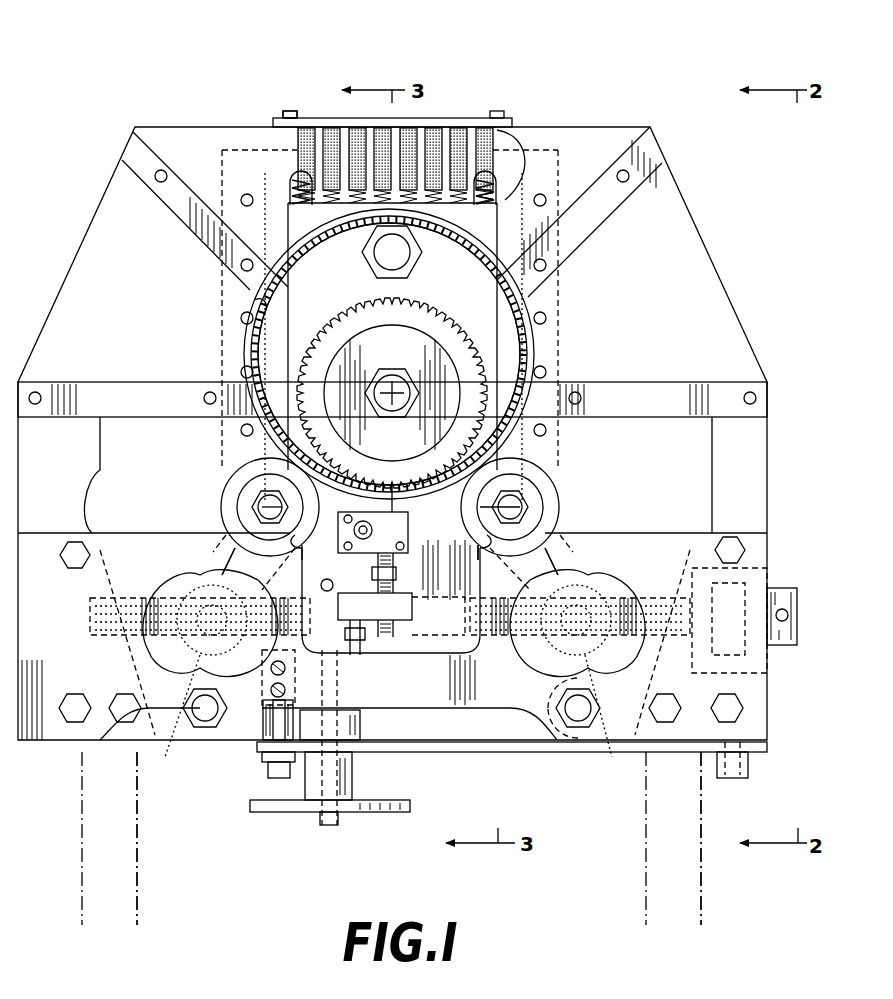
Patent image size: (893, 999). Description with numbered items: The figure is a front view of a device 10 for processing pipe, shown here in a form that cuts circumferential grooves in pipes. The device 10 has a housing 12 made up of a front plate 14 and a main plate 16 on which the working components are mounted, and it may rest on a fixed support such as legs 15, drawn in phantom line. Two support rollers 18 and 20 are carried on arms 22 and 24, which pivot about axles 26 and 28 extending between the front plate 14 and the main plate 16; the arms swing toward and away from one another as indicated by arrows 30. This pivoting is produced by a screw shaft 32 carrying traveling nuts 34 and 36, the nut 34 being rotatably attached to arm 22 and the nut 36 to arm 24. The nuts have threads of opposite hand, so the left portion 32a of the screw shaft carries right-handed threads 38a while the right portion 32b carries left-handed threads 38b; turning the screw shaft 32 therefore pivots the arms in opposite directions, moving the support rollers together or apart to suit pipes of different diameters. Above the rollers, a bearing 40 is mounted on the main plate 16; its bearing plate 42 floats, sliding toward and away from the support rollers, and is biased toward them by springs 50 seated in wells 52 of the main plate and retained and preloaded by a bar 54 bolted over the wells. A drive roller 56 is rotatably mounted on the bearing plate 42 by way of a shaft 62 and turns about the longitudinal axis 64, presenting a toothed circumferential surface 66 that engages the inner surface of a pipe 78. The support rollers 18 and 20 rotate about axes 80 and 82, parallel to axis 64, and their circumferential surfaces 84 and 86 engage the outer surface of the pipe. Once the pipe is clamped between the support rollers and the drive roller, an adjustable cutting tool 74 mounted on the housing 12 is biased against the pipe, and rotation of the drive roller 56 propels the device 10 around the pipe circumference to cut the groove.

The device 10 is at (165, 75).
The housing 12 is at (722, 290).
The front plate 14 is at (30, 662).
The legs 15 is at (130, 893).
The main plate 16 is at (70, 280).
The support roller 18 is at (227, 478).
The support roller 20 is at (550, 473).
The arm 22 is at (255, 505).
The arm 24 is at (530, 505).
The axle 26 is at (212, 735).
The axle 28 is at (560, 743).
The arrows 30 is at (610, 503).
The screw shaft 32 is at (455, 628).
The left portion of screw shaft 32a is at (145, 655).
The right portion of screw shaft 32b is at (663, 595).
The traveling nut 34 is at (187, 680).
The traveling nut 36 is at (610, 700).
The right-handed threads 38a is at (117, 600).
The left-handed threads 38b is at (672, 617).
The bearing 40 is at (490, 222).
The bearing plate 42 is at (288, 213).
The springs 50 is at (505, 180).
The wells 52 is at (285, 150).
The bar 54 is at (455, 122).
The drive roller 56 is at (533, 317).
The shaft 62 is at (422, 382).
The longitudinal axis 64 is at (385, 388).
The toothed circumferential surface 66 is at (345, 322).
The cutting tool 74 is at (410, 526).
The pipe 78 is at (255, 300).
The axis 80 is at (270, 497).
The axis 82 is at (540, 488).
The circumferential surface 84 is at (223, 457).
The circumferential surface 86 is at (552, 352).